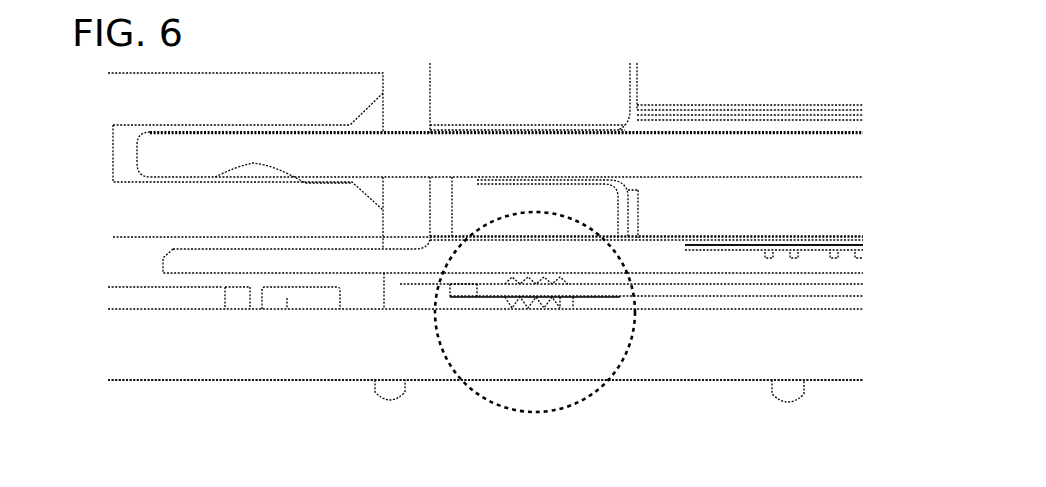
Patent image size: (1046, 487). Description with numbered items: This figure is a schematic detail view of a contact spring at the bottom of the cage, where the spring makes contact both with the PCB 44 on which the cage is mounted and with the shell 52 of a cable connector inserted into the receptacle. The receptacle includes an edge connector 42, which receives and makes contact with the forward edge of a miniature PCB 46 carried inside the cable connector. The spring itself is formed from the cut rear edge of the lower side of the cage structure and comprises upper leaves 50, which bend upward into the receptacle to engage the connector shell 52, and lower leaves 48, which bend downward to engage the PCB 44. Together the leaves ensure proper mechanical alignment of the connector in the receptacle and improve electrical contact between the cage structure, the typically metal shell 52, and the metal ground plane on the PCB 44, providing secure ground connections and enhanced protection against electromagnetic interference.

The edge connector 42 is at (114, 155).
The PCB 44 is at (247, 363).
The miniature PCB 46 is at (152, 163).
The lower leaves 48 is at (548, 305).
The upper leaves 50 is at (548, 280).
The shell 52 is at (726, 260).